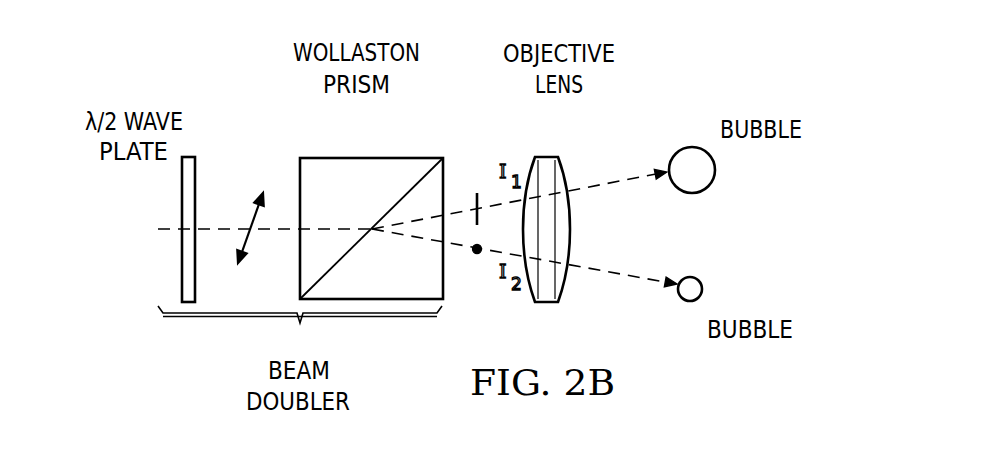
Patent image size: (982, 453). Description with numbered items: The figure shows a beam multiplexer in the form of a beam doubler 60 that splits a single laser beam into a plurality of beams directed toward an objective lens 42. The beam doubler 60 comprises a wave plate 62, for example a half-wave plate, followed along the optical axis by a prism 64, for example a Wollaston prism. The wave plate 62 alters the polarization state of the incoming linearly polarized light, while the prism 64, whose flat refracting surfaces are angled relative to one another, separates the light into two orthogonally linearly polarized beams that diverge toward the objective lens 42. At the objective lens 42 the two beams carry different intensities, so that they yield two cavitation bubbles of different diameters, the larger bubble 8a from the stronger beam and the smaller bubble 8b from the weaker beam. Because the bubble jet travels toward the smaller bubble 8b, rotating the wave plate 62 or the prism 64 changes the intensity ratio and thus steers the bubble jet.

The wave plate 62 is at (182, 195).
The prism 64 is at (371, 158).
The objective lens 42 is at (546, 157).
The beam doubler 60 is at (300, 332).
The bubble 8a is at (715, 169).
The bubble 8b is at (702, 292).